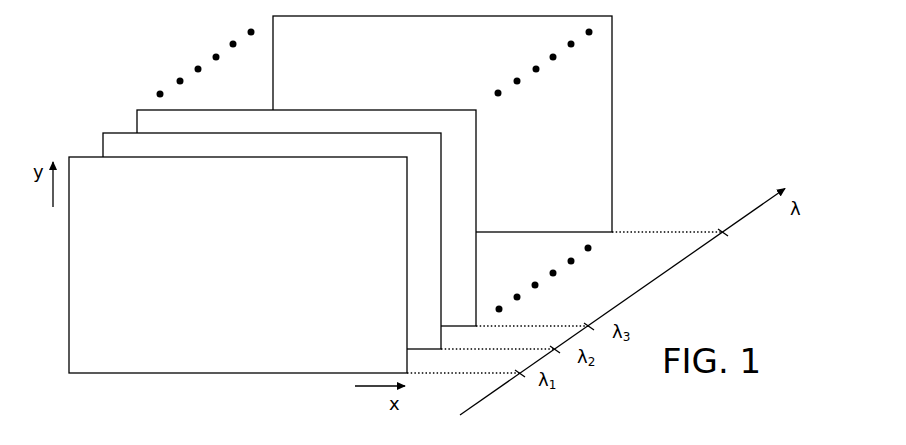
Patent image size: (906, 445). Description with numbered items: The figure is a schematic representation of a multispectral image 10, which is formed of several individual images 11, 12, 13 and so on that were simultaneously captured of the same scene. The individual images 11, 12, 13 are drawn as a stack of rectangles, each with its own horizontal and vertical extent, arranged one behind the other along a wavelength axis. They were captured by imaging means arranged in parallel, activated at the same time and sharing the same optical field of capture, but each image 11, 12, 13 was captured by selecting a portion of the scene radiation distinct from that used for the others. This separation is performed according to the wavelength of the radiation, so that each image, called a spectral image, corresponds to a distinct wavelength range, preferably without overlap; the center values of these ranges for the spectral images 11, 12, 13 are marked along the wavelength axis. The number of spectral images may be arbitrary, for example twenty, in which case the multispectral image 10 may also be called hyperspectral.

The multispectral image 10 is at (320, 226).
The spectral image 11 is at (82, 156).
The spectral image 12 is at (117, 133).
The spectral image 13 is at (150, 110).